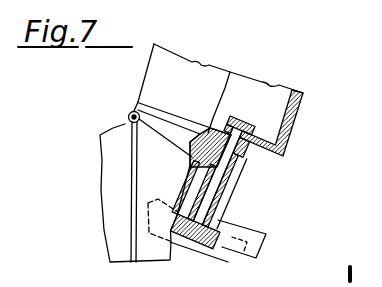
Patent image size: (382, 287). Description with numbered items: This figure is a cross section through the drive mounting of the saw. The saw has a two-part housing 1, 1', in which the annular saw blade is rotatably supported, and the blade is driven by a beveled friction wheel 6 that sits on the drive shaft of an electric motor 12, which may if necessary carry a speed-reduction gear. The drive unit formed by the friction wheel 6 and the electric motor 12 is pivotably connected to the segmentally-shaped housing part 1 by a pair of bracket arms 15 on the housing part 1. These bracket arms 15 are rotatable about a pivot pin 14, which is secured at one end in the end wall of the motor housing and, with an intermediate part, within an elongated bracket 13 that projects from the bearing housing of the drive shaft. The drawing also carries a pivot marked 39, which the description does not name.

The housing part 1 is at (153, 186).
The housing part 1' is at (105, 192).
The friction wheel 6 is at (226, 251).
The electric motor 12 is at (298, 118).
The elongated bracket 13 is at (236, 192).
The pivot pin 14 is at (217, 212).
The bracket arms 15 is at (243, 156).
The pivot 39 is at (130, 113).